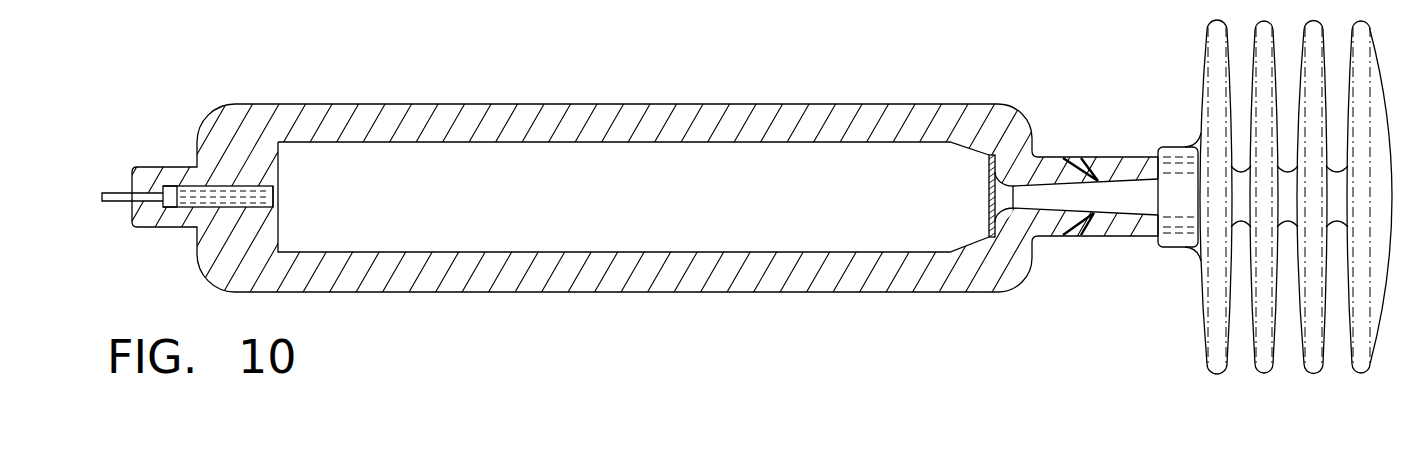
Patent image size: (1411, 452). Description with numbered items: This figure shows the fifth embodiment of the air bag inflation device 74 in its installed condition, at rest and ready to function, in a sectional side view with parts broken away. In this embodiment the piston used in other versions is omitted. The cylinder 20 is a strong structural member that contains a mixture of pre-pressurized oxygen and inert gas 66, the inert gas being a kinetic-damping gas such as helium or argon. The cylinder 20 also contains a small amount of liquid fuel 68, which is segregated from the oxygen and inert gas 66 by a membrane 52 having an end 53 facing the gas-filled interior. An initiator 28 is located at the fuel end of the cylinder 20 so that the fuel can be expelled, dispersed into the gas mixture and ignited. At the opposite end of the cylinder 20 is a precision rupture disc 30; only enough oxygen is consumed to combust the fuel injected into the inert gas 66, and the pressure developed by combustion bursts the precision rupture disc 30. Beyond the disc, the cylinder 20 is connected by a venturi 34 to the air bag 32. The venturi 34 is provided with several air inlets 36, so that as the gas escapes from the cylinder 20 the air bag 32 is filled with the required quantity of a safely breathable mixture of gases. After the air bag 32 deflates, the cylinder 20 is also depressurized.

The cylinder 20 is at (535, 112).
The device 74 is at (464, 72).
The mixture of pre-pressurized oxygen and inert gas 66 is at (855, 224).
The membrane 52 is at (278, 201).
The tube end 53 is at (278, 193).
The initiator 28 is at (169, 186).
The liquid fuel 68 is at (212, 203).
The precision rupture disc 30 is at (991, 198).
The venturi 34 is at (1147, 195).
The air inlets 36 is at (1083, 237).
The air bag 32 is at (1200, 78).